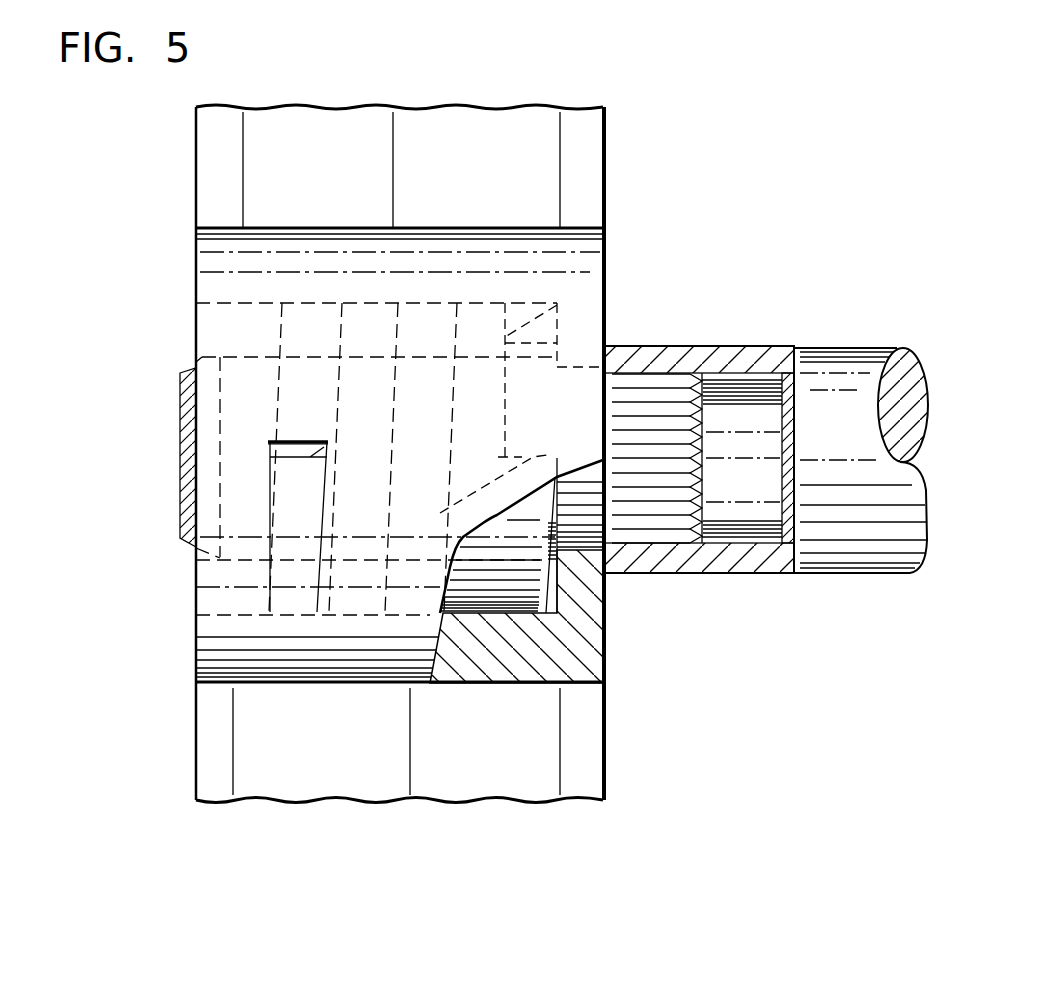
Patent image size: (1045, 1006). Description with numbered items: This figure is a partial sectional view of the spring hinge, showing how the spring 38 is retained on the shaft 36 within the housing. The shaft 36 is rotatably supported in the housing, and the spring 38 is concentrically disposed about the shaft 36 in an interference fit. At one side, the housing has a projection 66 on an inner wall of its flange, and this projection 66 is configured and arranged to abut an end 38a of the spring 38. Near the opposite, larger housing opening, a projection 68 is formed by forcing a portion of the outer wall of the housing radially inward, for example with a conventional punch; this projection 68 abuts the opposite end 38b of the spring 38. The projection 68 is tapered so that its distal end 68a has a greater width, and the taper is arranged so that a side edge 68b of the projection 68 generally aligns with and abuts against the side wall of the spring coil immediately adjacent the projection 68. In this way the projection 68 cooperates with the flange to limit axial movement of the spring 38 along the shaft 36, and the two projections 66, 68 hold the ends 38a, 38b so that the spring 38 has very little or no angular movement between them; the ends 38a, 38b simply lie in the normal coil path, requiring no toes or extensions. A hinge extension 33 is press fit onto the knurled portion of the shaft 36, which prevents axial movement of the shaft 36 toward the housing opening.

The hinge extension 33 is at (845, 347).
The shaft 36 is at (180, 407).
The spring 38 is at (557, 305).
The end of the spring 38a is at (267, 442).
The opposite end of the spring 38b is at (440, 513).
The projection 66 is at (542, 397).
The projection 68 is at (270, 467).
The distal end of the projection 68a is at (323, 441).
The side edge of the projection 68b is at (327, 497).